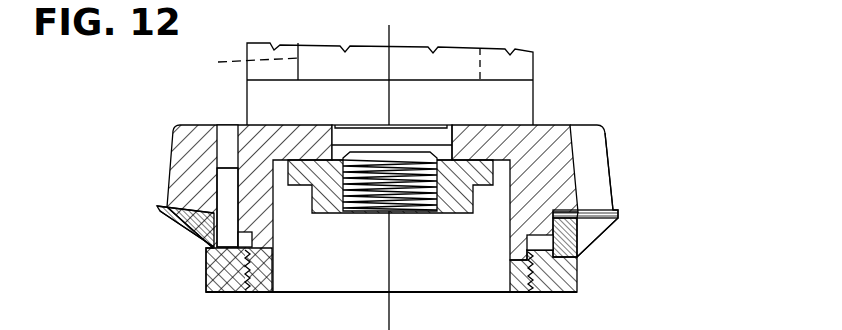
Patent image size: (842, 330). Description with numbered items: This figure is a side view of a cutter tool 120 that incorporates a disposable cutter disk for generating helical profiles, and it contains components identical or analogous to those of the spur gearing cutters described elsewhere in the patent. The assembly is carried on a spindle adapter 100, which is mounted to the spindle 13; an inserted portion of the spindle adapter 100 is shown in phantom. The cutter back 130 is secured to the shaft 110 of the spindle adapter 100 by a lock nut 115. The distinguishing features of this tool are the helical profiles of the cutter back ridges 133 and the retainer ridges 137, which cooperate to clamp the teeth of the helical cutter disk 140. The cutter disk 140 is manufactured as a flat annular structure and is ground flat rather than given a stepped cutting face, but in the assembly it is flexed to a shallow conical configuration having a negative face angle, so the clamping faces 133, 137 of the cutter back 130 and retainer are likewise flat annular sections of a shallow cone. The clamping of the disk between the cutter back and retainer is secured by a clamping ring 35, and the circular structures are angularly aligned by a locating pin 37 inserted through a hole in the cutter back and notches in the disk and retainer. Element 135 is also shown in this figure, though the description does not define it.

The spindle 13 is at (550, 61).
The spindle adapter 100 is at (236, 67).
The cutter tool 120 is at (433, 327).
The cutter back 130 is at (173, 145).
The cutter back ridges 133 is at (598, 212).
The helical cutter disk 140 is at (158, 207).
The bolt 135 is at (227, 218).
The locating pin 37 is at (200, 242).
The retainer ridges 137 is at (592, 236).
The shaft 110 is at (404, 193).
The lock nut 115 is at (455, 200).
The clamping ring 35 is at (230, 292).